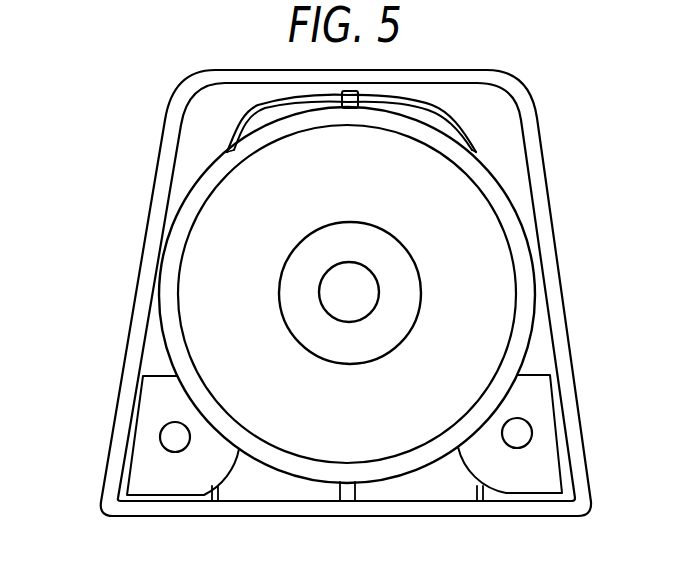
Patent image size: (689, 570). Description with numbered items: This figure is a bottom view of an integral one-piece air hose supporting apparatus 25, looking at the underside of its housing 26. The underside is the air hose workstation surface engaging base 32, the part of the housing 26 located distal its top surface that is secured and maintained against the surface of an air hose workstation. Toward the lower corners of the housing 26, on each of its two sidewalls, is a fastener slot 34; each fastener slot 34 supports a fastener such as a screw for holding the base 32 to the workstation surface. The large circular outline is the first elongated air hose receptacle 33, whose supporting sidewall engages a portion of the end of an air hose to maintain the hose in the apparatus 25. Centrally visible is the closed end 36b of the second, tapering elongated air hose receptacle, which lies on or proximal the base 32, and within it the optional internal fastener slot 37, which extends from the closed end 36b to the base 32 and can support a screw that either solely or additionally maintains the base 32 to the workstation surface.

The air hose supporting apparatus 25 is at (553, 92).
The housing 26 is at (101, 519).
The air hose workstation surface engaging base 32 is at (538, 175).
The first elongated air hose receptacle 33 is at (417, 485).
The fastener slot 34 is at (160, 434).
The closed end 36b is at (393, 312).
The internal fastener slot 37 is at (320, 282).